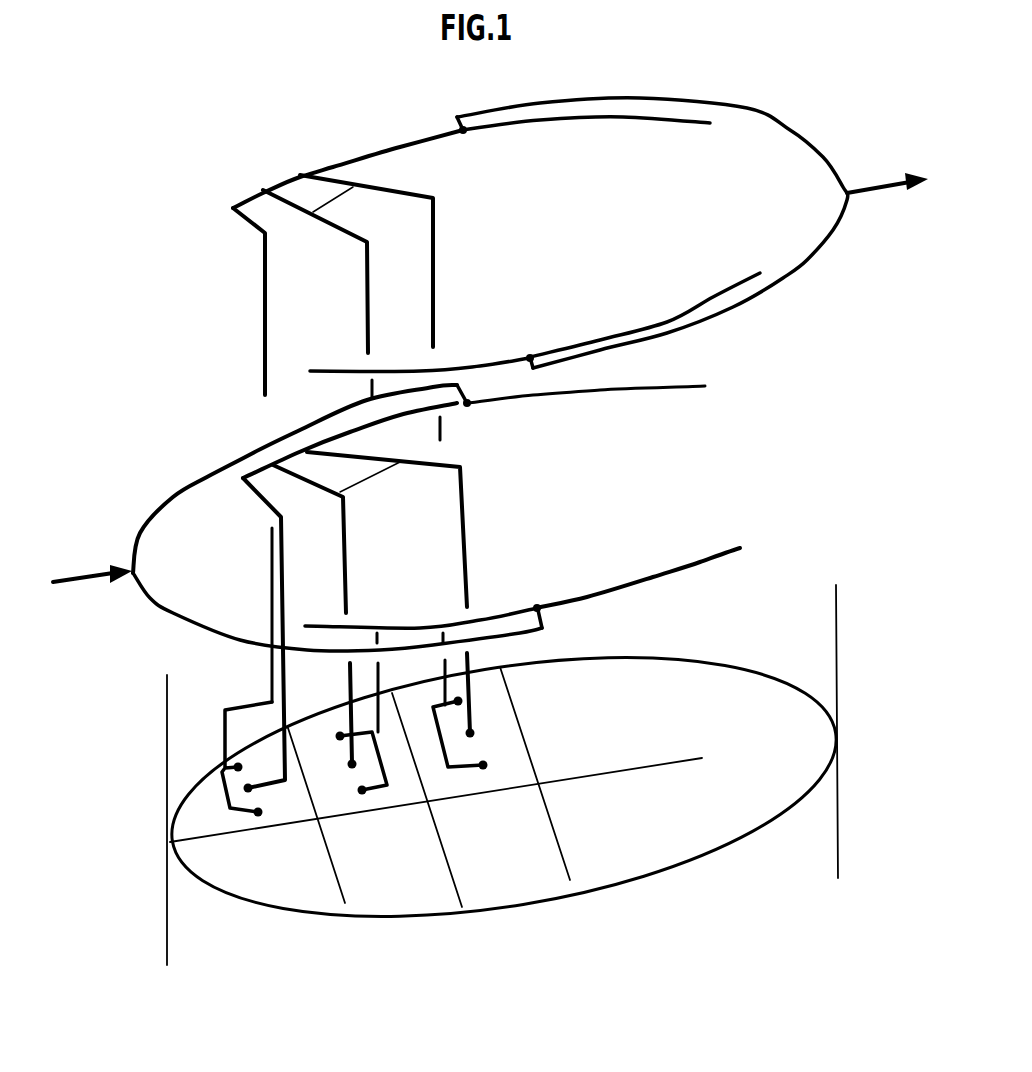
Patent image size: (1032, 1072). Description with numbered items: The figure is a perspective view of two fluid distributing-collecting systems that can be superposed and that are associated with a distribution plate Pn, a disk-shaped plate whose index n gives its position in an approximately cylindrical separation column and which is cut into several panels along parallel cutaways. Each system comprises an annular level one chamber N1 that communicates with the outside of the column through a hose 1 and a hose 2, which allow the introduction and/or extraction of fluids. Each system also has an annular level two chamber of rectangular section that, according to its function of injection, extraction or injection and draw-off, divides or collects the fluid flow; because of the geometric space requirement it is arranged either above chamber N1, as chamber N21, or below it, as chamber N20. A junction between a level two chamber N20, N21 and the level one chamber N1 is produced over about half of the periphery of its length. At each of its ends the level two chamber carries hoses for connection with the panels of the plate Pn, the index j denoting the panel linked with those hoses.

The annular level 1 chamber N1 is at (137, 465).
The annular level 2 chamber arranged above chamber N1 N21 is at (662, 318).
The annular level 2 chamber arranged below chamber N1 N20 is at (643, 578).
The index of a panel j is at (458, 129).
The plate Pn is at (663, 853).
The hose 1 is at (82, 570).
The hose 2 is at (897, 177).